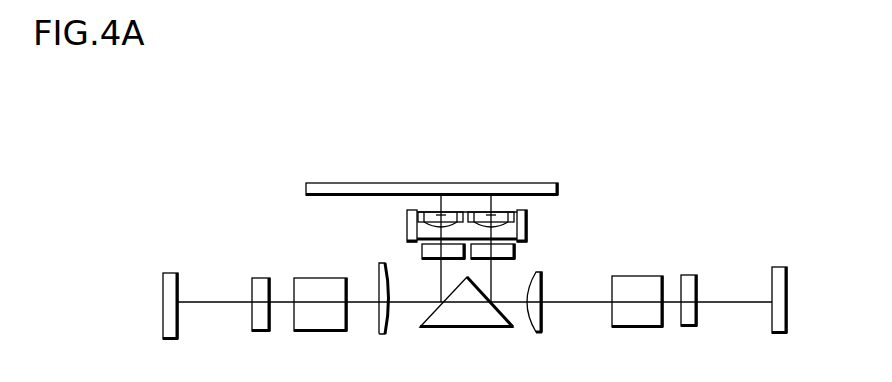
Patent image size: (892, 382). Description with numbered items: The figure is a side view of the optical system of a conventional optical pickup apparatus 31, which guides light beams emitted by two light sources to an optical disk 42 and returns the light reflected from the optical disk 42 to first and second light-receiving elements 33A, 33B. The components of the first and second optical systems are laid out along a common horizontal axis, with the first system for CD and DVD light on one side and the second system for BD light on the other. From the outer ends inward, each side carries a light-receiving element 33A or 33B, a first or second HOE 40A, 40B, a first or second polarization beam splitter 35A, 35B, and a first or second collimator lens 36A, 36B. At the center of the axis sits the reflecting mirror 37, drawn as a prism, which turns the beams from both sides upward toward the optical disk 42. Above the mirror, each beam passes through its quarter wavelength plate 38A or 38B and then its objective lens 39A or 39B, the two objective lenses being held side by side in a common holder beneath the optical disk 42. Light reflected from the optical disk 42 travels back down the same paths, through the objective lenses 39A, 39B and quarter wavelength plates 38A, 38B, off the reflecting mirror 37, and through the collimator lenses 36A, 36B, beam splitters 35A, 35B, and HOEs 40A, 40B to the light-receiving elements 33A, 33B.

The optical pickup apparatus 31 is at (447, 90).
The optical disk 42 is at (376, 183).
The first objective lens 39A is at (417, 212).
The second objective lens 39B is at (517, 211).
The first quarter wavelength plate 38A is at (422, 250).
The second quarter wavelength plate 38B is at (515, 252).
The first light-receiving element (PDIC) 33A is at (181, 332).
The second light-receiving element (PDIC) 33B is at (772, 326).
The first HOE 40A is at (258, 331).
The second HOE 40B is at (689, 327).
The first polarization beam splitter 35A is at (324, 331).
The second polarization beam splitter 35B is at (651, 328).
The first collimator lens 36A is at (385, 335).
The second collimator lens 36B is at (526, 333).
The reflecting mirror 37 is at (488, 328).